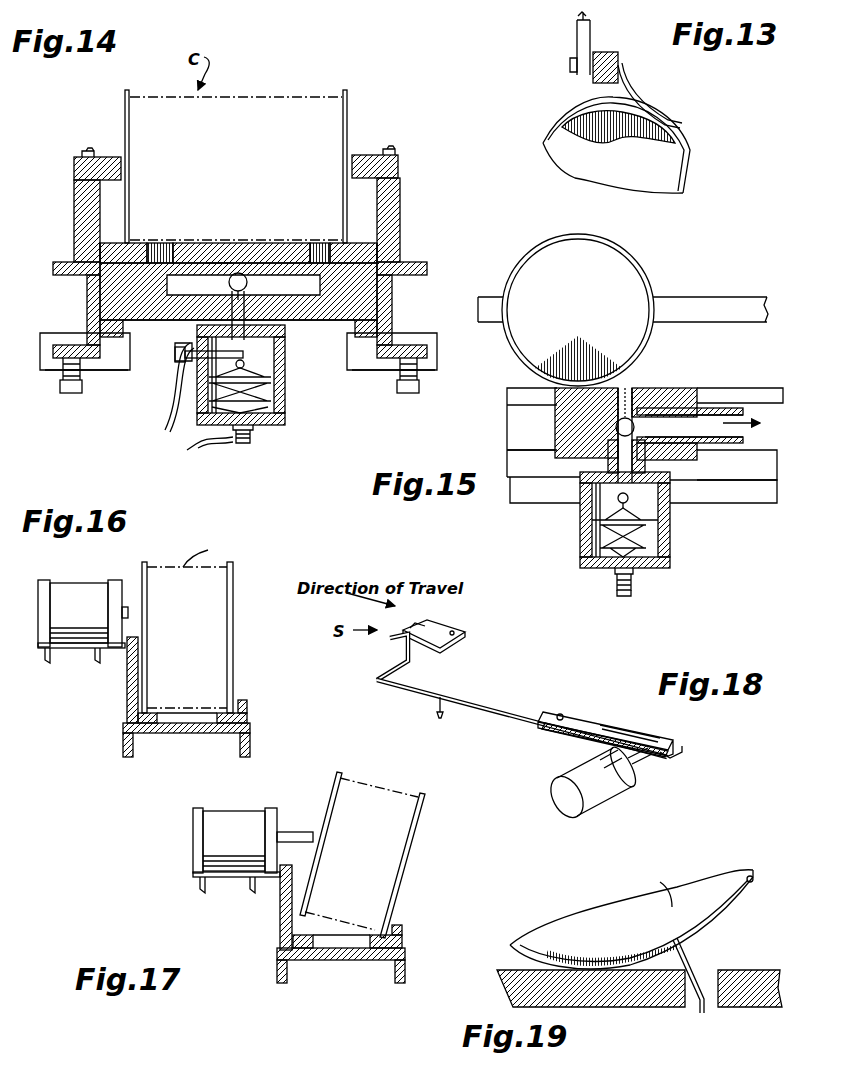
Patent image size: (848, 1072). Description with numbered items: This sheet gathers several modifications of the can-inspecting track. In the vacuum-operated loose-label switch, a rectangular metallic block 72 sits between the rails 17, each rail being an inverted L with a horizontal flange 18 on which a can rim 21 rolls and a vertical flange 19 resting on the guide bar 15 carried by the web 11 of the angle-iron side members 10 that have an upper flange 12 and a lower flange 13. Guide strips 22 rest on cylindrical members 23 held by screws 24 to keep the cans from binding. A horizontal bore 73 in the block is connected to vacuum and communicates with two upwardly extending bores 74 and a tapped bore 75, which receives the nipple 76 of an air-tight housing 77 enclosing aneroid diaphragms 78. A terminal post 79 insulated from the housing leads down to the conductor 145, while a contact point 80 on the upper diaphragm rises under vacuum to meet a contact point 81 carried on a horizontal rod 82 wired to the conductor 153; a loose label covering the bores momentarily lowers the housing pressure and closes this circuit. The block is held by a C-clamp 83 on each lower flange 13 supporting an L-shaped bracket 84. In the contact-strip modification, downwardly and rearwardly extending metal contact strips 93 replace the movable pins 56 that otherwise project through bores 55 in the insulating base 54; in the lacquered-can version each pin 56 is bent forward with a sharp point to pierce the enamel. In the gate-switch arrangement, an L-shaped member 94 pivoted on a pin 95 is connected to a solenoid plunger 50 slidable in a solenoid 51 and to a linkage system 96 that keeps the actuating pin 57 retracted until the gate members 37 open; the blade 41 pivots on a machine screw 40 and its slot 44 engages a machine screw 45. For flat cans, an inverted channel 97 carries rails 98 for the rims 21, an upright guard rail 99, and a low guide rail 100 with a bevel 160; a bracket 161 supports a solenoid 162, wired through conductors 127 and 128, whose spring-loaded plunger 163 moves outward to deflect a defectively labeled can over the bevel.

In FIG. 14, the side member 10 is at (86, 315).
In FIG. 14, the web 11 is at (87, 287).
In FIG. 14, the upper flange 12 is at (56, 262).
In FIG. 14, the lower flange 13 is at (62, 346).
In FIG. 14, the guide bar 15 is at (302, 118).
In FIG. 15, the guide bar 15 is at (530, 473).
In FIG. 14, the rail 17 is at (115, 246).
In FIG. 15, the rail 17 is at (506, 418).
In FIG. 14, the horizontal flange 18 is at (140, 248).
In FIG. 15, the horizontal flange 18 is at (527, 389).
In FIG. 14, the vertical flange 19 is at (118, 286).
In FIG. 15, the vertical flange 19 is at (525, 432).
In FIG. 13, the rim 21 is at (692, 160).
In FIG. 15, the rim 21 is at (652, 280).
In FIG. 16, the rim 21 is at (235, 563).
In FIG. 17, the rim 21 is at (420, 794).
In FIG. 19, the rim 21 is at (728, 918).
In FIG. 14, the guide strip 22 is at (103, 157).
In FIG. 15, the guide strip 22 is at (750, 297).
In FIG. 14, the cylindrical member 23 is at (75, 198).
In FIG. 14, the screw 24 is at (88, 151).
In FIG. 18, the gate member 37 is at (683, 757).
In FIG. 18, the machine screw 40 is at (563, 715).
In FIG. 18, the blade 41 is at (674, 741).
In FIG. 18, the slot 44 is at (650, 740).
In FIG. 18, the machine screw 45 is at (630, 737).
In FIG. 18, the plunger 50 is at (641, 762).
In FIG. 18, the solenoid 51 is at (598, 803).
In FIG. 18, the base 54 is at (468, 635).
In FIG. 19, the bore 55 is at (708, 1008).
In FIG. 19, the pin 56 is at (688, 948).
In FIG. 18, the actuating pin 57 is at (436, 621).
In FIG. 19, the actuating pin 57 is at (753, 880).
In FIG. 14, the metallic block 72 is at (258, 243).
In FIG. 15, the metallic block 72 is at (698, 393).
In FIG. 14, the horizontal bore 73 is at (218, 262).
In FIG. 15, the horizontal bore 73 is at (634, 427).
In FIG. 14, the upwardly extending bore 74 is at (180, 248).
In FIG. 15, the upwardly extending bore 74 is at (630, 397).
In FIG. 14, the tapped bore 75 is at (282, 330).
In FIG. 15, the tapped bore 75 is at (640, 445).
In FIG. 14, the nipple 76 is at (248, 283).
In FIG. 15, the nipple 76 is at (584, 478).
In FIG. 14, the housing 77 is at (288, 409).
In FIG. 15, the housing 77 is at (578, 532).
In FIG. 14, the diaphragm 78 is at (225, 400).
In FIG. 15, the diaphragm 78 is at (648, 535).
In FIG. 14, the terminal post 79 is at (252, 430).
In FIG. 15, the terminal post 79 is at (635, 575).
In FIG. 14, the contact point 80 is at (273, 383).
In FIG. 15, the contact point 80 is at (660, 516).
In FIG. 14, the contact point 81 is at (255, 358).
In FIG. 15, the contact point 81 is at (630, 500).
In FIG. 14, the horizontal rod 82 is at (226, 353).
In FIG. 14, the C-clamp 83 is at (105, 370).
In FIG. 14, the L-shaped bracket 84 is at (128, 362).
In FIG. 13, the metal contact strip 93 is at (630, 92).
In FIG. 18, the L-shaped member 94 is at (510, 717).
In FIG. 18, the pin 95 is at (442, 698).
In FIG. 18, the linkage system 96 is at (416, 657).
In FIG. 16, the inverted channel 97 is at (187, 734).
In FIG. 17, the inverted channel 97 is at (352, 961).
In FIG. 16, the rail 98 is at (157, 714).
In FIG. 17, the rail 98 is at (313, 937).
In FIG. 16, the guard rail 99 is at (127, 710).
In FIG. 17, the guard rail 99 is at (280, 925).
In FIG. 16, the guide rail 100 is at (248, 718).
In FIG. 17, the guide rail 100 is at (405, 943).
In FIG. 16, the conductor 127 is at (98, 664).
In FIG. 17, the conductor 127 is at (252, 883).
In FIG. 16, the conductor 128 is at (50, 664).
In FIG. 17, the conductor 128 is at (203, 885).
In FIG. 14, the conductor 145 is at (200, 446).
In FIG. 13, the conductor 145 is at (576, 30).
In FIG. 15, the conductor 145 is at (617, 580).
In FIG. 14, the conductor 153 is at (178, 412).
In FIG. 13, the conductor 153 is at (595, 30).
In FIG. 16, the bevel 160 is at (247, 700).
In FIG. 17, the bevel 160 is at (395, 925).
In FIG. 16, the bracket 161 is at (100, 618).
In FIG. 17, the bracket 161 is at (227, 862).
In FIG. 16, the solenoid 162 is at (77, 588).
In FIG. 17, the solenoid 162 is at (248, 813).
In FIG. 16, the plunger 163 is at (131, 612).
In FIG. 17, the plunger 163 is at (305, 825).